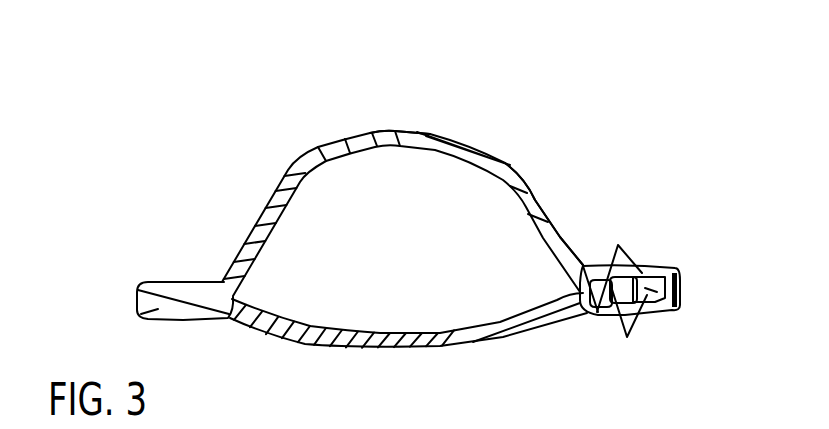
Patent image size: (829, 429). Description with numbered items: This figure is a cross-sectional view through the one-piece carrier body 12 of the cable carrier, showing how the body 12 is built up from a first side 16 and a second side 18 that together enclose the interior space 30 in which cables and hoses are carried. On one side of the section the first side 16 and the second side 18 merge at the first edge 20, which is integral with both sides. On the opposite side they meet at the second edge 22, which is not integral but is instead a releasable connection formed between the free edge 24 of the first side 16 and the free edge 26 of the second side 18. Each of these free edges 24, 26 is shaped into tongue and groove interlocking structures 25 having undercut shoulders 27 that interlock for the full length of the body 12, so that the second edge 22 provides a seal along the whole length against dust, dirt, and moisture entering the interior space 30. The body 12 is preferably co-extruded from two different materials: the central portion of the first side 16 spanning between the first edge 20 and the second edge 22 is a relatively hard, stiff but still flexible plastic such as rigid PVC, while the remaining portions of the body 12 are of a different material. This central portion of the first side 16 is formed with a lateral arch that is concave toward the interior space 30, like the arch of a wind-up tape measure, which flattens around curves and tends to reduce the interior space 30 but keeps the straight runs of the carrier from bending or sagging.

The carrier body 12 is at (323, 138).
The first side 16 is at (390, 350).
The second side 18 is at (397, 130).
The first edge 20 is at (160, 277).
The second edge 22 is at (683, 292).
The free edge of the first side 24 is at (657, 314).
The tongue and groove interlocking structures 25 is at (703, 318).
The free edge of the second side 26 is at (648, 263).
The undercut shoulders 27 is at (628, 327).
The interior space 30 is at (489, 198).